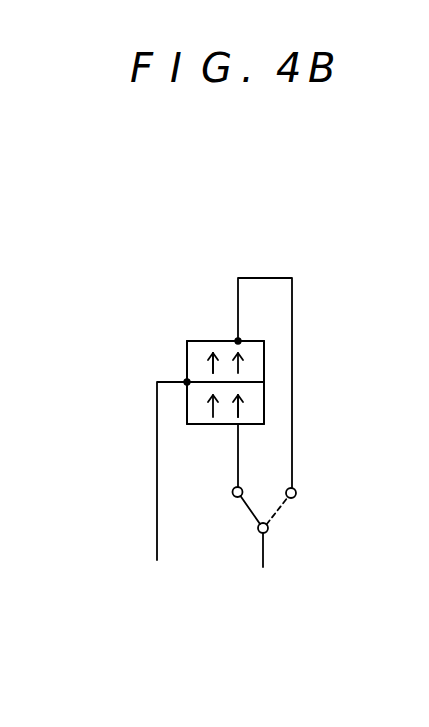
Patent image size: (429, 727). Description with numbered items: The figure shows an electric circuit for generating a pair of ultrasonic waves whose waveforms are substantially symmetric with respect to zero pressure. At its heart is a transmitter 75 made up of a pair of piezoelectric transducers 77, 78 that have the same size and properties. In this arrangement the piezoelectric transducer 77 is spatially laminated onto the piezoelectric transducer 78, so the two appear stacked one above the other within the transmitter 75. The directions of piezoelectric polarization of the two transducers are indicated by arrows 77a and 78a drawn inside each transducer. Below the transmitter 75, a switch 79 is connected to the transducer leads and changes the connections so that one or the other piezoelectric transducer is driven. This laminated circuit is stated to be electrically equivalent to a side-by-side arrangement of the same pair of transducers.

The transmitter 75 is at (304, 384).
The piezoelectric transducer 77 is at (198, 350).
The arrow 77a is at (216, 364).
The piezoelectric transducer 78 is at (223, 420).
The arrow 78a is at (240, 412).
The switch 79 is at (252, 517).